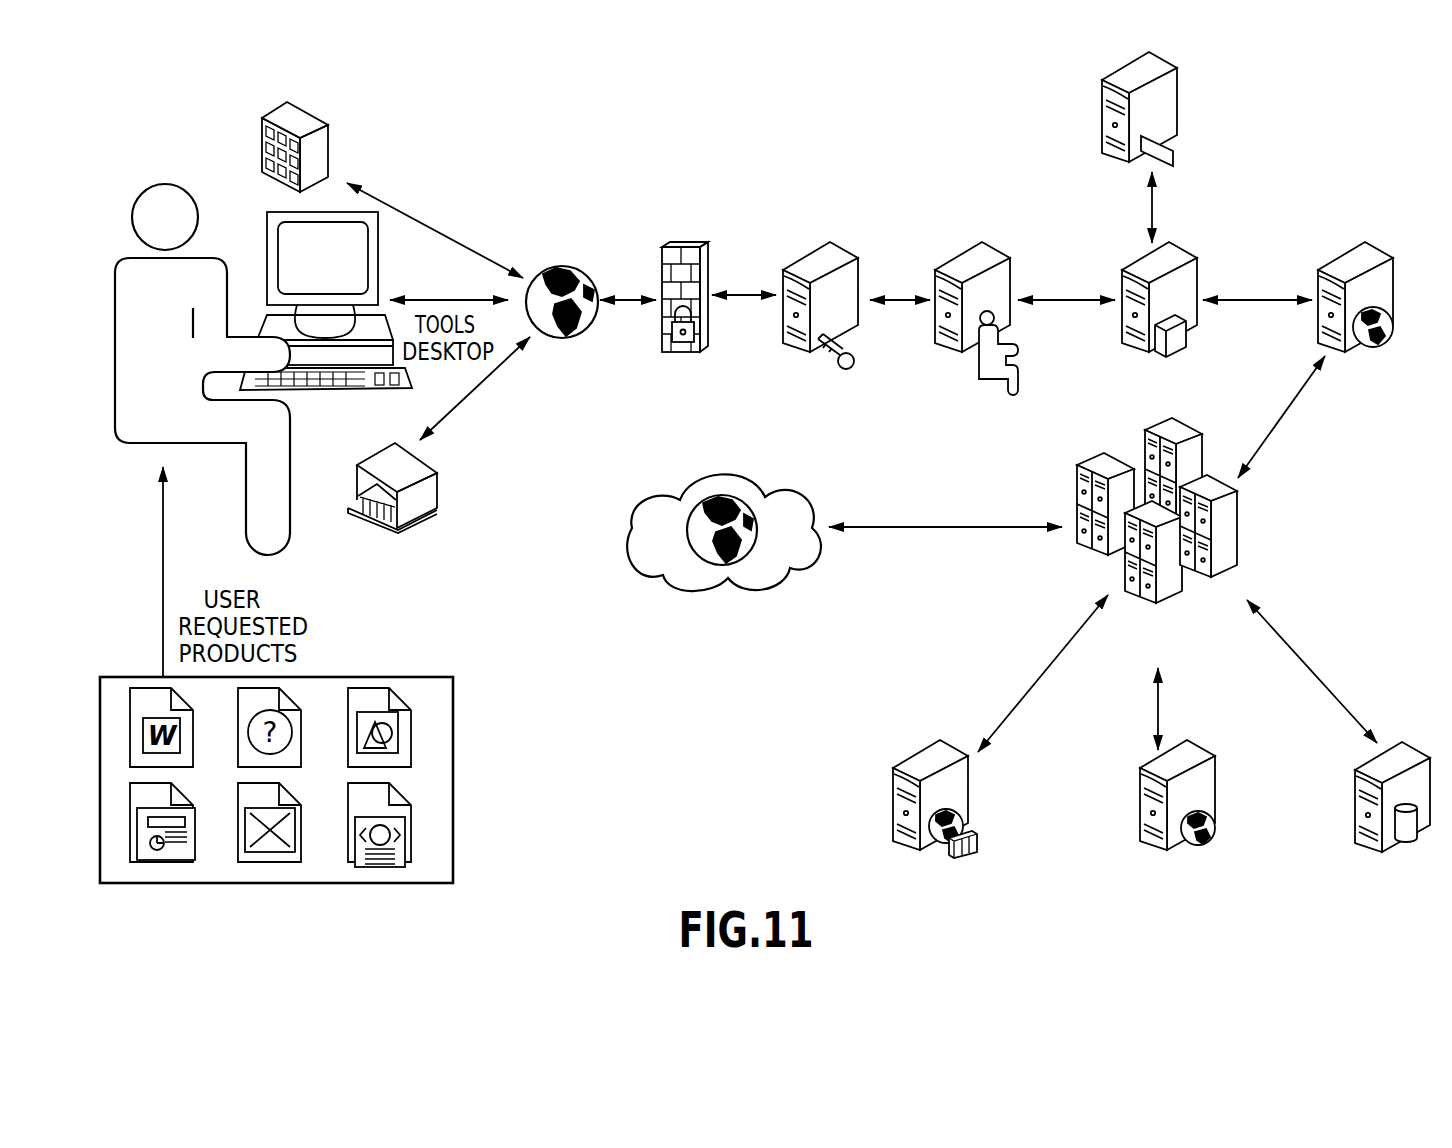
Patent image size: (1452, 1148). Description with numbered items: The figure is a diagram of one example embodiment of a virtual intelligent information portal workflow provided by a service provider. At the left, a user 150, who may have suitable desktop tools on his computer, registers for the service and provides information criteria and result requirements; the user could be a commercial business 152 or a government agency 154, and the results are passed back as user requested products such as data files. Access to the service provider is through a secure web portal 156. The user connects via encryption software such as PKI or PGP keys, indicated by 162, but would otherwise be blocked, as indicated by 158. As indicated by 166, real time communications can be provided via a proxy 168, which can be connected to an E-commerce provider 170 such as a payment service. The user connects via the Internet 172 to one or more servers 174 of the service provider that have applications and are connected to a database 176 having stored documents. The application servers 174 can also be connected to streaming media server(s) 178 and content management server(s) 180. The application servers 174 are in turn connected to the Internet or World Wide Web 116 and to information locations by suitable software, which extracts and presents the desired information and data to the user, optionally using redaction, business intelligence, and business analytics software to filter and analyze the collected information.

The user 150 is at (146, 185).
The commercial business 152 is at (313, 115).
The government agency 154 is at (380, 450).
The secure web portal 156 is at (542, 268).
The blocked access 158 is at (672, 245).
The encryption software 162 is at (843, 247).
The real time communications 166 is at (997, 243).
The proxy 168 is at (1183, 243).
The E-commerce provider 170 is at (1178, 104).
The Internet 172 is at (1383, 244).
The Internet 116 is at (787, 478).
The servers 174 is at (1252, 494).
The database 176 is at (1413, 745).
The streaming media server(s) 178 is at (955, 747).
The content management server(s) 180 is at (1200, 750).